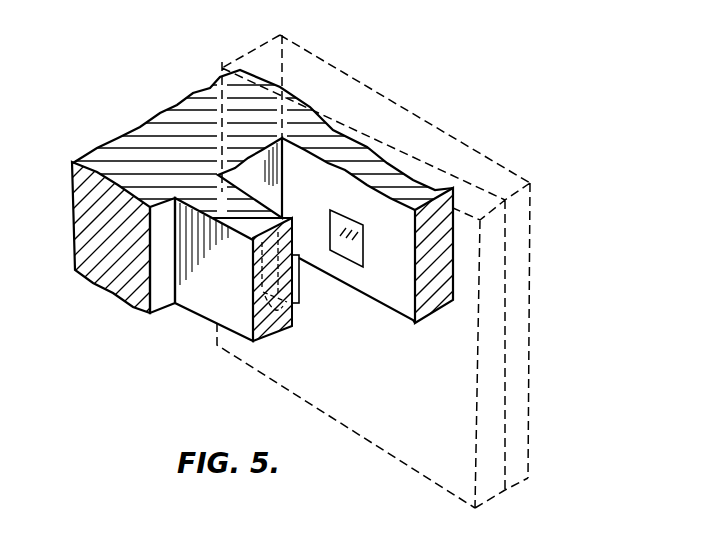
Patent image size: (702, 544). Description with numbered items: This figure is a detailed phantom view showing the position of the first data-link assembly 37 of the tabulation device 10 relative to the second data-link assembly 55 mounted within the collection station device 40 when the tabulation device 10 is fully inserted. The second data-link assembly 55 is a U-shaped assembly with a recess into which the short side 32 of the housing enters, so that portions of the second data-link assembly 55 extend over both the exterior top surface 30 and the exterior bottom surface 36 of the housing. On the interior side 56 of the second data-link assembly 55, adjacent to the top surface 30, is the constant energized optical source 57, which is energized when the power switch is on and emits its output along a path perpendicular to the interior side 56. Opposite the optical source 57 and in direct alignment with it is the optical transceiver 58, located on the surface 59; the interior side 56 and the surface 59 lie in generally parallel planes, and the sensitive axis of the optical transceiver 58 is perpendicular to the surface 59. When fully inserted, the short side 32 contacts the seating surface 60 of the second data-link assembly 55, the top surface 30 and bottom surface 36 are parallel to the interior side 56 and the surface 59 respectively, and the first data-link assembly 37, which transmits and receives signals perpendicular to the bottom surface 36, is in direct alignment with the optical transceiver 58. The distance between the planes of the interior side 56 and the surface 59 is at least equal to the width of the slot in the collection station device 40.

The tabulation device 10 is at (452, 123).
The exterior top surface 30 is at (532, 239).
The short side 32 is at (221, 60).
The exterior bottom surface 36 is at (357, 396).
The first data-link assembly 37 is at (300, 278).
The collection station device 40 is at (140, 335).
The second data-link assembly 55 is at (135, 127).
The interior side 56 is at (397, 287).
The constant energized optical source 57 is at (363, 245).
The optical transceiver 58 is at (300, 318).
The surface 59 is at (294, 238).
The seating surface 60 is at (250, 172).